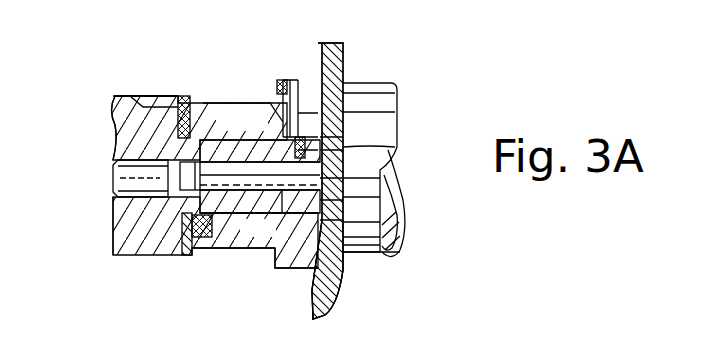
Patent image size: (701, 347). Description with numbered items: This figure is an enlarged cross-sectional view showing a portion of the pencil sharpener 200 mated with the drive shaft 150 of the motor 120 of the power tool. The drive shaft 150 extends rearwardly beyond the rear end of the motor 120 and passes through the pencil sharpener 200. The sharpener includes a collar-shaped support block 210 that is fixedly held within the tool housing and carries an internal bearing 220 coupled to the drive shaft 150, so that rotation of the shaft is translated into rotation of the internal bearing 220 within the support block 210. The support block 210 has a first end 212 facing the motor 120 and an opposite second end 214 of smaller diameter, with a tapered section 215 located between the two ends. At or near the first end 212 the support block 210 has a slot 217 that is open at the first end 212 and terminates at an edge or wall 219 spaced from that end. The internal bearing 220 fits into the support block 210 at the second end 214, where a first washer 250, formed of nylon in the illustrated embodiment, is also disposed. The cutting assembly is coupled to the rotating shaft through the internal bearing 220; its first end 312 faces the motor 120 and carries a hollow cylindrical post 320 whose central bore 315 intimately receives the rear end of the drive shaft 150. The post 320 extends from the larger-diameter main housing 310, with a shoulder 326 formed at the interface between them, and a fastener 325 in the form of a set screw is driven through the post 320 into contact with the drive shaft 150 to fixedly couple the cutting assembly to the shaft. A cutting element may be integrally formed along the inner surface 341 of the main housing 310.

The motor 120 is at (390, 88).
The drive shaft 150 is at (280, 178).
The pencil sharpener 200 is at (115, 102).
The support block 210 is at (352, 290).
The first end 212 is at (400, 243).
The second end 214 is at (134, 100).
The tapered section 215 is at (273, 252).
The slot 217 is at (343, 55).
The edge or wall 219 is at (280, 84).
The internal bearing 220 is at (197, 260).
The first washer 250 is at (144, 256).
The main housing 310 is at (113, 218).
The first end 312 is at (212, 100).
The central bore 315 is at (212, 108).
The post 320 is at (385, 196).
The fastener 325 is at (345, 148).
The shoulder 326 is at (186, 97).
The inner surface 341 is at (113, 174).